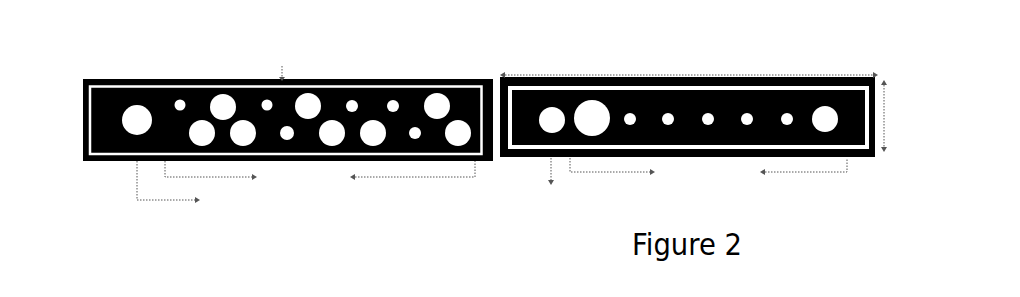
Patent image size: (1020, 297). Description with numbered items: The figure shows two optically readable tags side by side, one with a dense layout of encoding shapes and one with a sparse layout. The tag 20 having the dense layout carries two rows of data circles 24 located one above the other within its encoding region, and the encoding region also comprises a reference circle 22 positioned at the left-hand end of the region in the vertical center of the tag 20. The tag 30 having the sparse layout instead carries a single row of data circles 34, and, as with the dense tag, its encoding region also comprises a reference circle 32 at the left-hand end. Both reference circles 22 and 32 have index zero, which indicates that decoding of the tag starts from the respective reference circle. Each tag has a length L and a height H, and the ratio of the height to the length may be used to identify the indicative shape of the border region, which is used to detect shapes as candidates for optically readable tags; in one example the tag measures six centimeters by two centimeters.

The tag 20 is at (268, 156).
The reference circle 22 is at (105, 87).
The data circles 24 is at (415, 136).
The tag 30 is at (726, 165).
The reference circle 32 is at (549, 124).
The data circles 34 is at (824, 122).